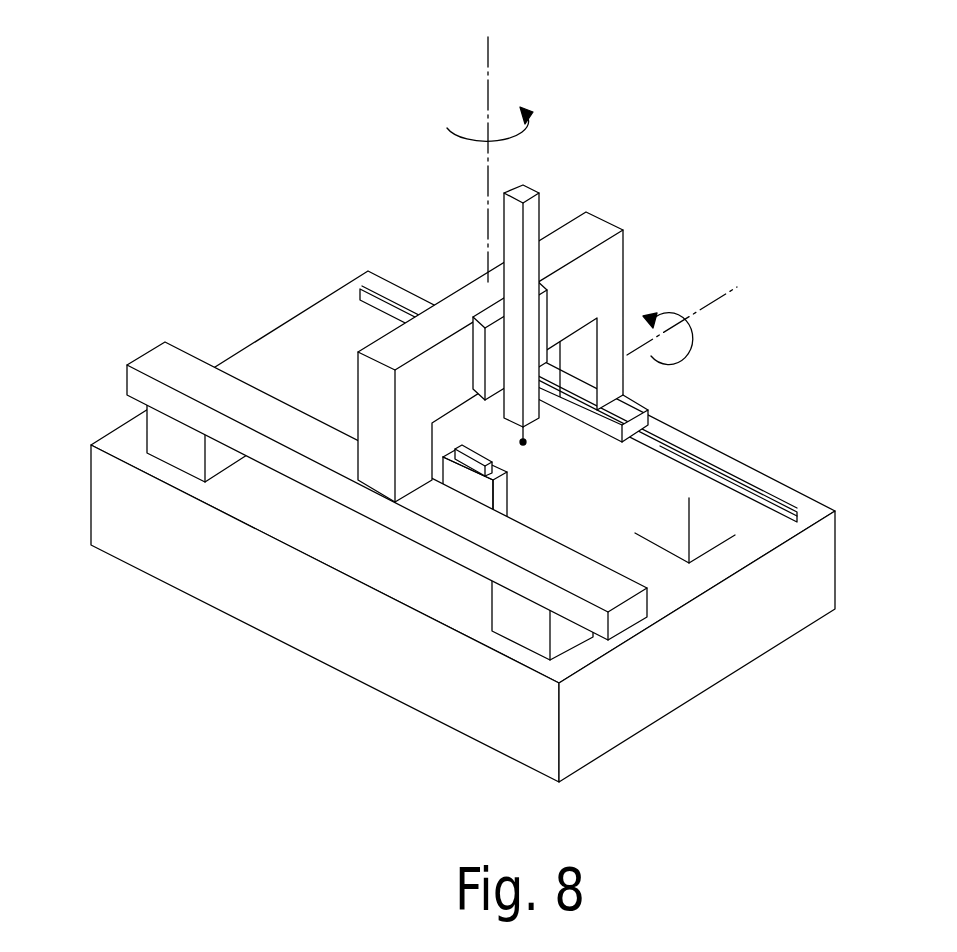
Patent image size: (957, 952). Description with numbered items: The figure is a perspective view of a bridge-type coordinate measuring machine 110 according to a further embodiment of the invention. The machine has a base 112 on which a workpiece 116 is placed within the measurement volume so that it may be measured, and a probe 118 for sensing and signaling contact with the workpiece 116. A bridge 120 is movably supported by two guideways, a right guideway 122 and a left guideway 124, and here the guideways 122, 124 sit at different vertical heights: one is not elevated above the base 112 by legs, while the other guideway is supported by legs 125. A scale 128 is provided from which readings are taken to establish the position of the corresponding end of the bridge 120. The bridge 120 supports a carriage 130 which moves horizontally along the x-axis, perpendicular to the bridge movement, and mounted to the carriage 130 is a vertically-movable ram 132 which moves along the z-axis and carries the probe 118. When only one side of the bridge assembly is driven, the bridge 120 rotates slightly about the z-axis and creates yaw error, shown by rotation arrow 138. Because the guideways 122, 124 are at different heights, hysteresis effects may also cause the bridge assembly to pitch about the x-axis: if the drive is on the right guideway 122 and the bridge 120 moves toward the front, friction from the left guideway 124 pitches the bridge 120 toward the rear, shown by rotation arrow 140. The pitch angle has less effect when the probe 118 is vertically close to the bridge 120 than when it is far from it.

The bridge-type coordinate measuring machine 110 is at (434, 398).
The base 112 is at (678, 688).
The workpiece 116 is at (485, 456).
The probe 118 is at (524, 444).
The bridge 120 is at (476, 292).
The right guideway 122 is at (680, 426).
The left guideway 124 is at (148, 364).
The legs 125 is at (160, 444).
The scale 128 is at (742, 487).
The carriage 130 is at (470, 356).
The vertically-movable ram 132 is at (522, 190).
The rotation arrow 138 is at (458, 120).
The rotation arrow 140 is at (686, 334).